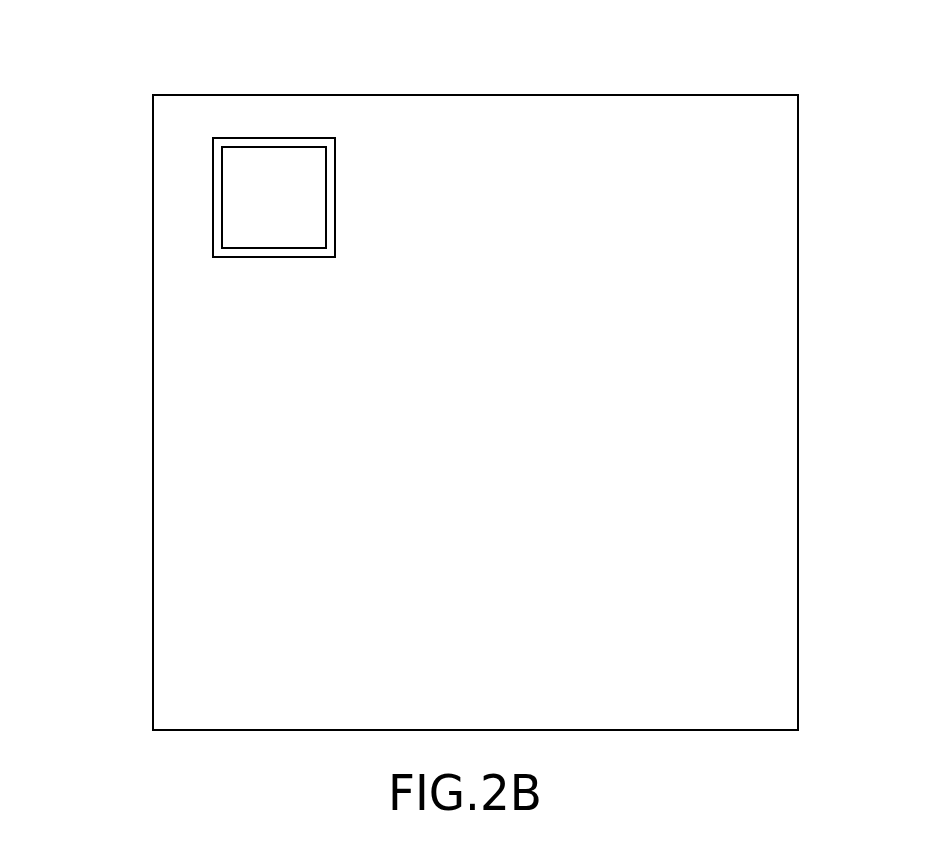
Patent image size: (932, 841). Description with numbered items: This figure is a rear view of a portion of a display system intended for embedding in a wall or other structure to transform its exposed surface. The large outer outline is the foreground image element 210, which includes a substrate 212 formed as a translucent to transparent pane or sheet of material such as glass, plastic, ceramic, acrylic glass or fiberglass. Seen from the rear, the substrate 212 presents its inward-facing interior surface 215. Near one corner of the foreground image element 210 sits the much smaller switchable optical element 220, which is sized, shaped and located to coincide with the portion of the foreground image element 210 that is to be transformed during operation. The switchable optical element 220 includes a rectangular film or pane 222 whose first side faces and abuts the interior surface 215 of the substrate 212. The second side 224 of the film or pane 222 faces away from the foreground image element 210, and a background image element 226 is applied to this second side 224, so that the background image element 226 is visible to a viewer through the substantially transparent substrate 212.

The foreground image element 210 is at (838, 72).
The substrate 212 is at (798, 222).
The interior surface 215 is at (762, 185).
The switchable optical element 220 is at (402, 189).
The film or pane 222 is at (336, 245).
The second side 224 is at (328, 250).
The background image element 226 is at (230, 247).